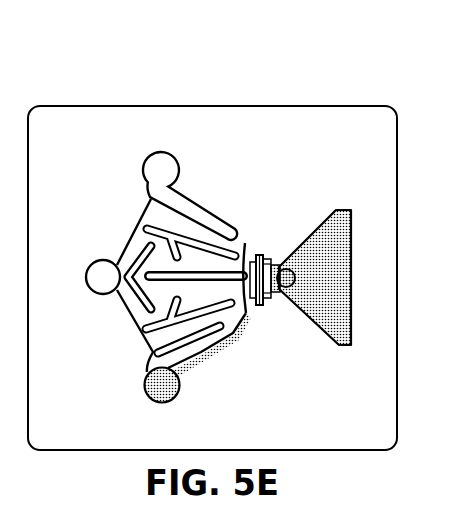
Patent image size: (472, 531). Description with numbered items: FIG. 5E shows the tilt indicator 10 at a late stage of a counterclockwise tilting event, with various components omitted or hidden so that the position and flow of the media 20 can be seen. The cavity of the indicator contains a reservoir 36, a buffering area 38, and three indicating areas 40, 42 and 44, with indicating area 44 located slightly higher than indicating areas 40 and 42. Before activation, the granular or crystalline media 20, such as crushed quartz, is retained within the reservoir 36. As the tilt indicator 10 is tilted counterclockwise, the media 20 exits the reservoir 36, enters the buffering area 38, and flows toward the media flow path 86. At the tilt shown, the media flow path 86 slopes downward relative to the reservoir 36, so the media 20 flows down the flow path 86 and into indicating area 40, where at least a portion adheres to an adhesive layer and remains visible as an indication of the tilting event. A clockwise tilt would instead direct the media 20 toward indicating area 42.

The tilt indicator 10 is at (119, 74).
The media 20 is at (221, 303).
The reservoir 36 is at (322, 310).
The buffering area 38 is at (246, 232).
The indicating area 40 is at (146, 382).
The indicating area 42 is at (178, 164).
The indicating area 44 is at (106, 261).
The media flow path 86 is at (201, 346).